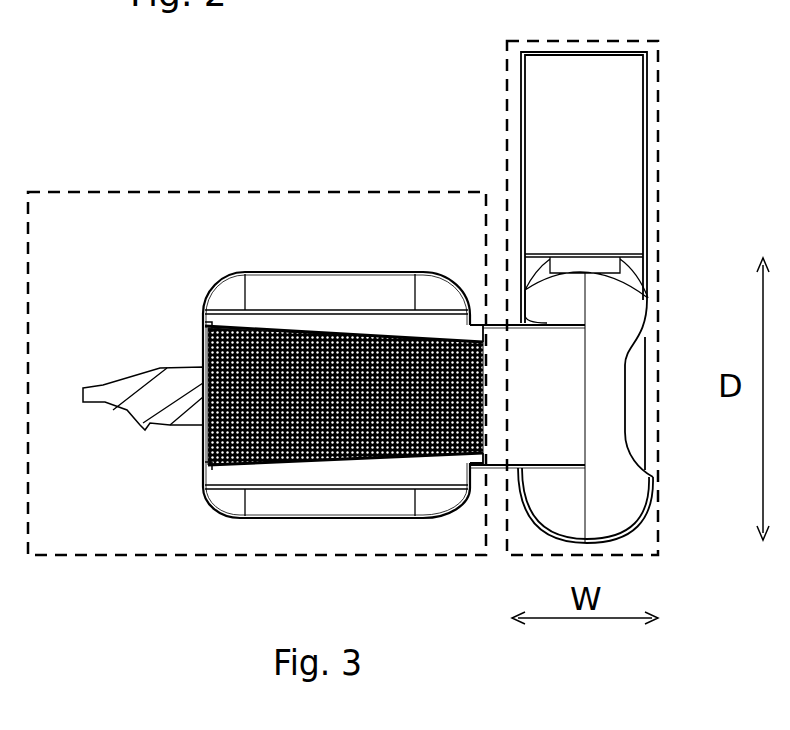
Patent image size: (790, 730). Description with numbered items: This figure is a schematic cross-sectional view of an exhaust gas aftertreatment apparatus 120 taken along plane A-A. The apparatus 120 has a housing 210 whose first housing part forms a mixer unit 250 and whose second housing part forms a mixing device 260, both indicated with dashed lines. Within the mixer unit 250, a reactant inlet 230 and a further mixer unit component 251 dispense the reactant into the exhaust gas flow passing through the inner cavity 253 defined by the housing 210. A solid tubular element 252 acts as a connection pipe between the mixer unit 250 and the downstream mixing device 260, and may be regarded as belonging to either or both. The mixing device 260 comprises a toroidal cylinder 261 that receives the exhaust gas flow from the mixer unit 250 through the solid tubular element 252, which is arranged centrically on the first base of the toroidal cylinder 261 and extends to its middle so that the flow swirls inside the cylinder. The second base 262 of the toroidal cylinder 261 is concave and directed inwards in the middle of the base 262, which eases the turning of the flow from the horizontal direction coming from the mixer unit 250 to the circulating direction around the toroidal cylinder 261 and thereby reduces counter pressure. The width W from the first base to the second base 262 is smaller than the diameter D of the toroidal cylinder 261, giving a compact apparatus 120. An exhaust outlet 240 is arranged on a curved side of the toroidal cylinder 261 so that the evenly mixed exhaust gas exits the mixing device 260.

The exhaust gas aftertreatment apparatus 120 is at (280, 148).
The housing 210 is at (315, 278).
The reactant inlet 230 is at (118, 387).
The exhaust outlet 240 is at (555, 60).
The mixer unit 250 is at (357, 192).
The mixer unit component 251 is at (213, 327).
The solid tubular element 252 is at (500, 328).
The inner cavity 253 is at (275, 295).
The mixing device 260 is at (562, 58).
The toroidal cylinder 261 is at (642, 312).
The second base 262 is at (625, 385).